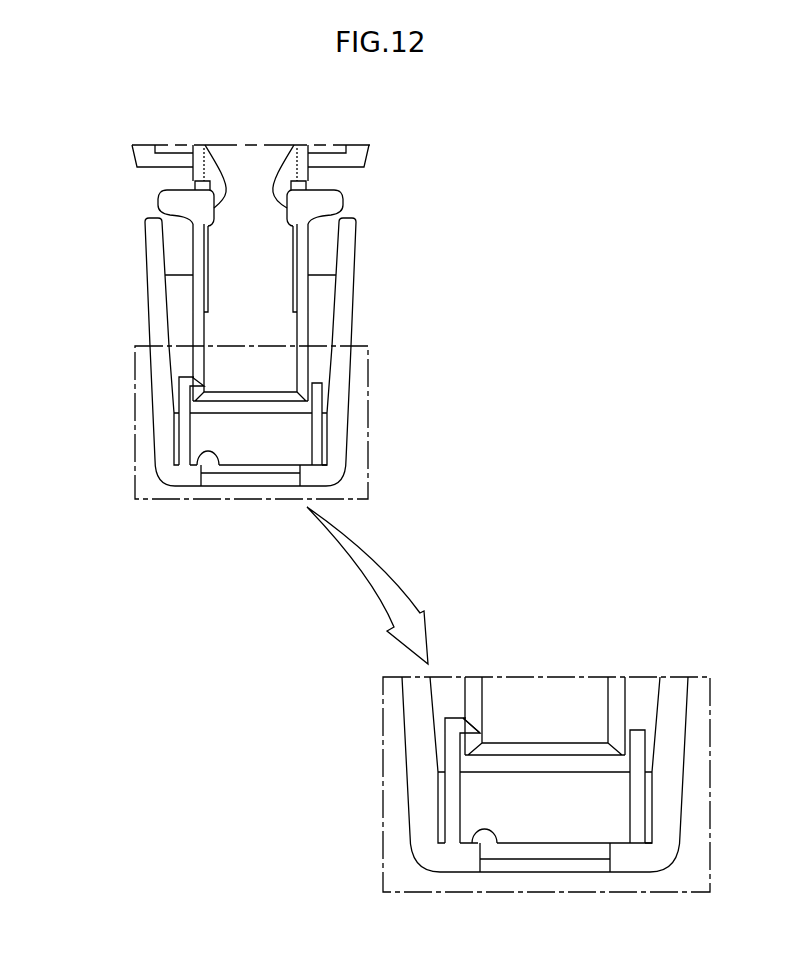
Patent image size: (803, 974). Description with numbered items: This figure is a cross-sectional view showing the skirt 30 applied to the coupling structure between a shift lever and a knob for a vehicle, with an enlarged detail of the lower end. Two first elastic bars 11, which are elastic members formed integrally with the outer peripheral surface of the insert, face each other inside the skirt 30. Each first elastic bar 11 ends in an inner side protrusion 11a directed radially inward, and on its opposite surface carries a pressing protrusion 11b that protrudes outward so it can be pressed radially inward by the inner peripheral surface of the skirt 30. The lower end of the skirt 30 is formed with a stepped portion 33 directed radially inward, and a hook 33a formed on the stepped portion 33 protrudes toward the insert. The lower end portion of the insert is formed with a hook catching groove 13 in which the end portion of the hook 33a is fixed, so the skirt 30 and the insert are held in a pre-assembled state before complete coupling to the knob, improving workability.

The first elastic bar 11 is at (198, 290).
The inner side protrusion 11a is at (205, 145).
The pressing protrusion 11b is at (165, 200).
The skirt 30 is at (340, 358).
The stepped portion 33 is at (216, 453).
The hook 33a is at (185, 398).
The hook catching groove 13 is at (478, 733).